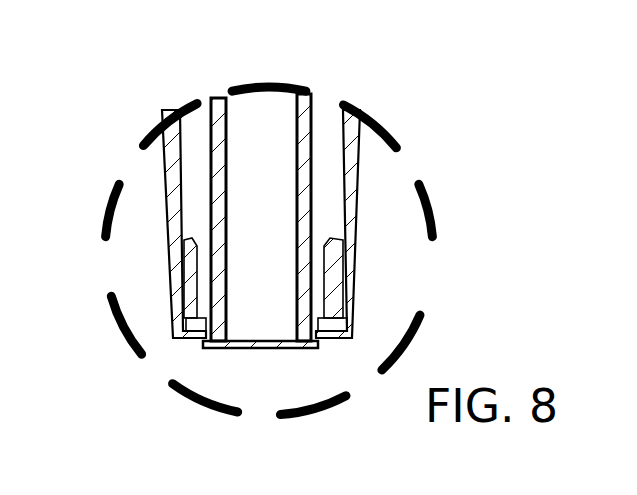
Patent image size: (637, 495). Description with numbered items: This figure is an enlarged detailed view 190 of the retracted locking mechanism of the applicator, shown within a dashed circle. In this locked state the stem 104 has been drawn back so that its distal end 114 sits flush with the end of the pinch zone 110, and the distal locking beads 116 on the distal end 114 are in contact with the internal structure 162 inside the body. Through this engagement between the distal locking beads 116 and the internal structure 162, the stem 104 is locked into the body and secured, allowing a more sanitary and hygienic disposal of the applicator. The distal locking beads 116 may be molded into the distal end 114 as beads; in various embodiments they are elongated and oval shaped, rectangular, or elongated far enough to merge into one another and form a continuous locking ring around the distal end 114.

The detailed view 190 is at (197, 60).
The stem 104 is at (315, 108).
The pinch zone 110 is at (353, 252).
The internal structure 162 is at (192, 262).
The distal locking beads 116 is at (203, 313).
The distal end 114 is at (204, 341).